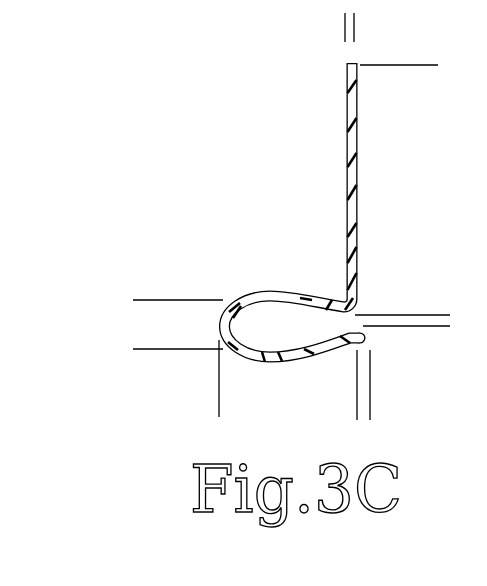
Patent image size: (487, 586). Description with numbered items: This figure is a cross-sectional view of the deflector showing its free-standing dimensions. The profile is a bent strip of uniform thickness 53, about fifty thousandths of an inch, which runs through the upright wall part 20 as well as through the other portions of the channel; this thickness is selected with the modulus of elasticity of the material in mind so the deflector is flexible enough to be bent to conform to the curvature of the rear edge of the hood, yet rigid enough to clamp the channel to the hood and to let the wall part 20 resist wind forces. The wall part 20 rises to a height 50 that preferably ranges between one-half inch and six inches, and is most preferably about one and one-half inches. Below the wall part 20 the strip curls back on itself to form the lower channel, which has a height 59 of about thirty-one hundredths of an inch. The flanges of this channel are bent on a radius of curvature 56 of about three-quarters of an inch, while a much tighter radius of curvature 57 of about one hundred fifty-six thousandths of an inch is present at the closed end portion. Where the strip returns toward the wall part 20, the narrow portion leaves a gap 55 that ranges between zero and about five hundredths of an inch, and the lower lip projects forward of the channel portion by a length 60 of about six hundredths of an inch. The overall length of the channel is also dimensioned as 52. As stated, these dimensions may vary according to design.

The wall part 20 is at (358, 221).
The height 50 is at (425, 65).
The length of loop portion 52 is at (357, 405).
The thickness 53 is at (323, 27).
The gap 55 is at (425, 326).
The radius of curvature 56 is at (285, 337).
The radius of curvature 57 is at (248, 296).
The height 59 is at (149, 260).
The length 60 is at (370, 405).